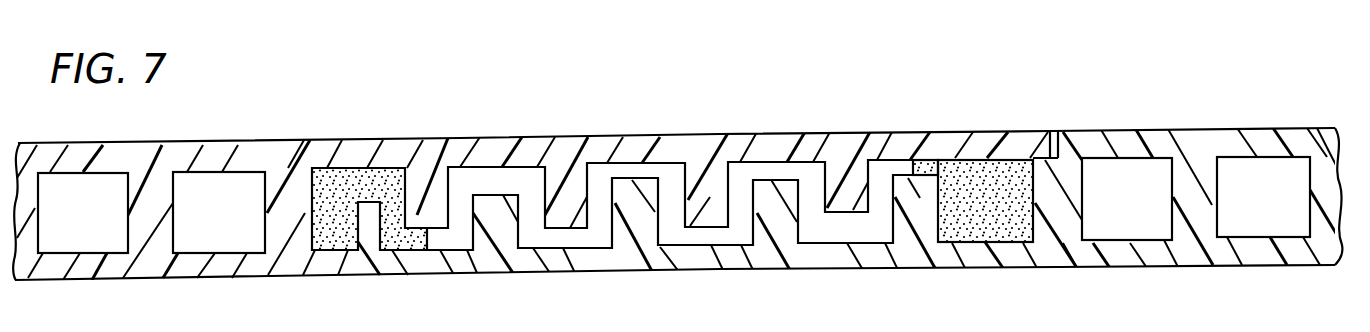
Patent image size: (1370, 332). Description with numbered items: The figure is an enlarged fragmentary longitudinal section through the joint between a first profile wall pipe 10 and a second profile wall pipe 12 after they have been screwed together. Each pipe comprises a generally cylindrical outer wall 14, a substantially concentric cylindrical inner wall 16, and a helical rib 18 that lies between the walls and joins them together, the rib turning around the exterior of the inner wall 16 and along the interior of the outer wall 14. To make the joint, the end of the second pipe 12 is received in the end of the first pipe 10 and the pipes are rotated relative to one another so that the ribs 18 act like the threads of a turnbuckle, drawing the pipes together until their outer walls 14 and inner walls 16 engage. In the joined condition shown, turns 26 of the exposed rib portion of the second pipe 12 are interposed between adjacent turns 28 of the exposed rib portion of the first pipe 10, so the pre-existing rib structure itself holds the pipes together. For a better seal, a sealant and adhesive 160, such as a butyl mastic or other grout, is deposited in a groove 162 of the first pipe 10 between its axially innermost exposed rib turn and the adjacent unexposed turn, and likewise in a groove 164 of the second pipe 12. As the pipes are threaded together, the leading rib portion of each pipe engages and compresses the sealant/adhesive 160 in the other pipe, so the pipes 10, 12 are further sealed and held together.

The first profile wall pipe 10 is at (328, 124).
The second profile wall pipe 12 is at (1201, 121).
The outer wall 14 is at (80, 178).
The inner wall 16 is at (92, 254).
The helical rib 18 is at (187, 202).
The turns of the exposed rib portion of the second pipe 26 is at (770, 178).
The turns of the exposed rib portion of the first pipe 28 is at (547, 229).
The sealant and adhesive 160 is at (381, 183).
The groove of the first pipe 162 is at (313, 191).
The groove of the second pipe 164 is at (1020, 190).